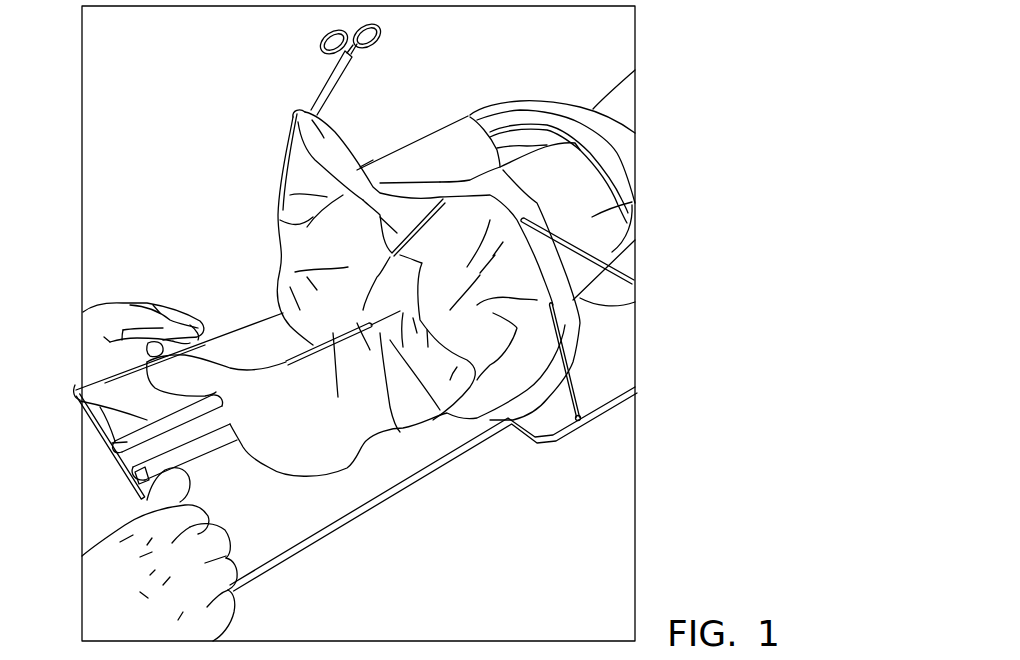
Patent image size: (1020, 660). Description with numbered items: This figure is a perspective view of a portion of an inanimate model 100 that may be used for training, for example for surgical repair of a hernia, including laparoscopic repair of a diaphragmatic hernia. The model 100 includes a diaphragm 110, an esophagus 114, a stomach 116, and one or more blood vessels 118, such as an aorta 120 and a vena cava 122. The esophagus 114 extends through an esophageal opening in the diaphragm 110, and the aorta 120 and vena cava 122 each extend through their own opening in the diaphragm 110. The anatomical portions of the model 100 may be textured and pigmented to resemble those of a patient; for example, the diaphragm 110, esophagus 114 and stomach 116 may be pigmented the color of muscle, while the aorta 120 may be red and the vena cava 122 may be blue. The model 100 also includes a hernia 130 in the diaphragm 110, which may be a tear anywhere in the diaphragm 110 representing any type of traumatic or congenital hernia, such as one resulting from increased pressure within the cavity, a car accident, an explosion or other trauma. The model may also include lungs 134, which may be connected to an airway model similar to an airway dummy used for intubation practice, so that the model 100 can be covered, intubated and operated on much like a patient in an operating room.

The inanimate model 100 is at (672, 50).
The diaphragm 110 is at (478, 332).
The esophagus 114 is at (380, 354).
The stomach 116 is at (377, 448).
The blood vessels 118 is at (165, 462).
The aorta 120 is at (140, 485).
The vena cava 122 is at (76, 393).
The hernia 130 is at (297, 279).
The lungs 134 is at (632, 202).